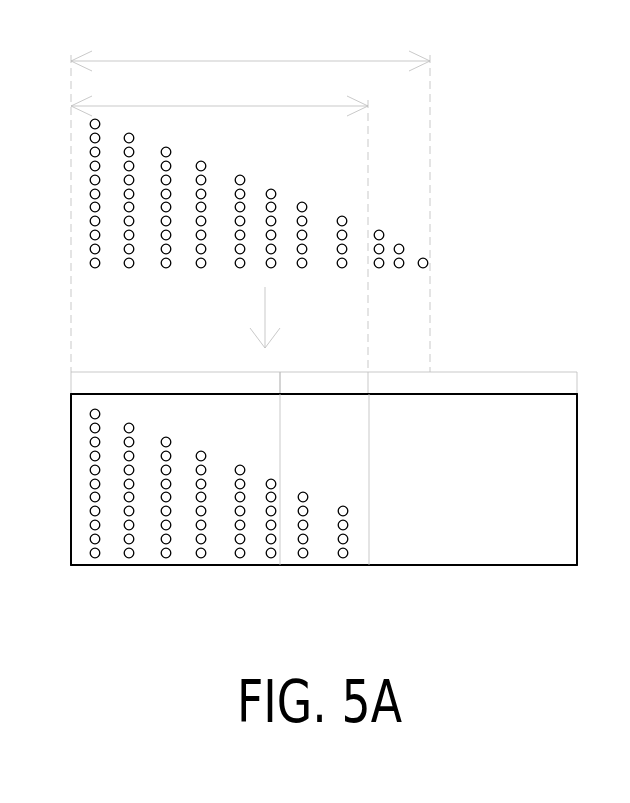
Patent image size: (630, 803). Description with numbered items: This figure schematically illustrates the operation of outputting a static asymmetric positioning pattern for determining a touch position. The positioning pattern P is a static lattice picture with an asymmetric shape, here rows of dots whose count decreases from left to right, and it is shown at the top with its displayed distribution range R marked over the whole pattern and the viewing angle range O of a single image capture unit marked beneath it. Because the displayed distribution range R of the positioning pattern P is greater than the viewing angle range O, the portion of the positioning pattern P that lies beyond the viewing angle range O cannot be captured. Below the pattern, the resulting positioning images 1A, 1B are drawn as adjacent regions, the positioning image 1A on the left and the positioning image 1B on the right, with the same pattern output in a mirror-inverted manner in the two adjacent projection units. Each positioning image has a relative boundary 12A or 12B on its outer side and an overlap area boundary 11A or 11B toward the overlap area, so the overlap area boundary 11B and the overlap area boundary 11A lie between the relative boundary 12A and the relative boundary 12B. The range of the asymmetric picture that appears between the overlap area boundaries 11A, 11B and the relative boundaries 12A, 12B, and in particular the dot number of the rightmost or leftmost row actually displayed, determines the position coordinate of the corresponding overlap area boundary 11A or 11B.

The displayed distribution range R is at (250, 48).
The viewing angle range O is at (219, 95).
The positioning pattern P is at (112, 292).
The positioning image 1A is at (160, 372).
The positioning image 1B is at (488, 372).
The relative boundary 12A is at (71, 565).
The relative boundary 12B is at (577, 565).
The overlap area boundary 11B is at (280, 565).
The overlap area boundary 11A is at (369, 565).